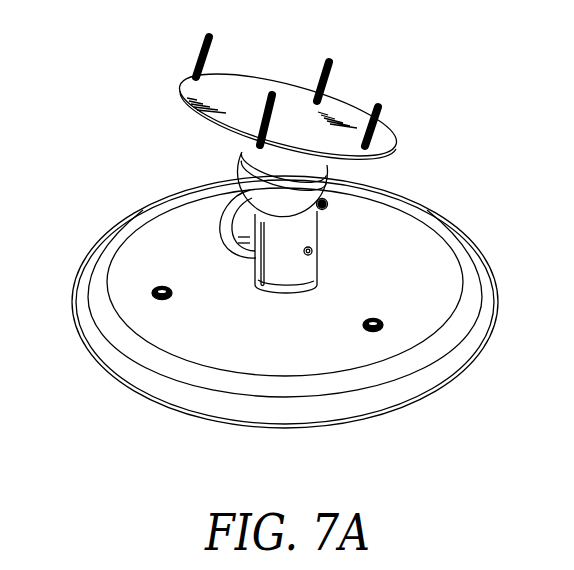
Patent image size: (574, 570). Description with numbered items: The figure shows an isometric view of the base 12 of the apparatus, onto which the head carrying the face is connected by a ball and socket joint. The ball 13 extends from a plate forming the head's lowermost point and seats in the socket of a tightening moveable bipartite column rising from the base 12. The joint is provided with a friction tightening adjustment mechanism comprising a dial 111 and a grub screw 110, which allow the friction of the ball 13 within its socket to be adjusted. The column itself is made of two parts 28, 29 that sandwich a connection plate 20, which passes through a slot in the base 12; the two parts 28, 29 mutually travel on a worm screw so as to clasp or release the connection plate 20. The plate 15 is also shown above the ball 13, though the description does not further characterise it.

The base 12 is at (313, 383).
The ball 13 is at (300, 173).
The mounting plate 15 is at (200, 118).
The connection plate 20 is at (263, 272).
The column part 28 is at (308, 273).
The column part 29 is at (257, 257).
The grub screw 110 is at (310, 250).
The dial 111 is at (232, 221).